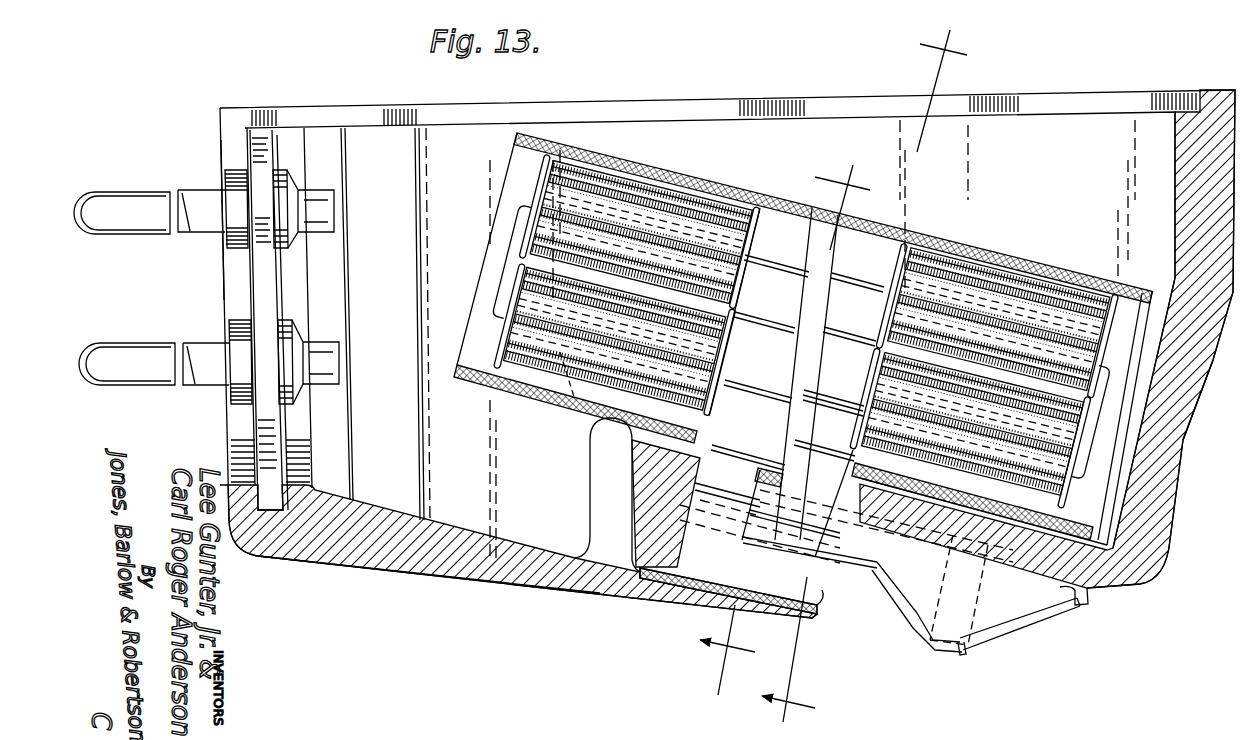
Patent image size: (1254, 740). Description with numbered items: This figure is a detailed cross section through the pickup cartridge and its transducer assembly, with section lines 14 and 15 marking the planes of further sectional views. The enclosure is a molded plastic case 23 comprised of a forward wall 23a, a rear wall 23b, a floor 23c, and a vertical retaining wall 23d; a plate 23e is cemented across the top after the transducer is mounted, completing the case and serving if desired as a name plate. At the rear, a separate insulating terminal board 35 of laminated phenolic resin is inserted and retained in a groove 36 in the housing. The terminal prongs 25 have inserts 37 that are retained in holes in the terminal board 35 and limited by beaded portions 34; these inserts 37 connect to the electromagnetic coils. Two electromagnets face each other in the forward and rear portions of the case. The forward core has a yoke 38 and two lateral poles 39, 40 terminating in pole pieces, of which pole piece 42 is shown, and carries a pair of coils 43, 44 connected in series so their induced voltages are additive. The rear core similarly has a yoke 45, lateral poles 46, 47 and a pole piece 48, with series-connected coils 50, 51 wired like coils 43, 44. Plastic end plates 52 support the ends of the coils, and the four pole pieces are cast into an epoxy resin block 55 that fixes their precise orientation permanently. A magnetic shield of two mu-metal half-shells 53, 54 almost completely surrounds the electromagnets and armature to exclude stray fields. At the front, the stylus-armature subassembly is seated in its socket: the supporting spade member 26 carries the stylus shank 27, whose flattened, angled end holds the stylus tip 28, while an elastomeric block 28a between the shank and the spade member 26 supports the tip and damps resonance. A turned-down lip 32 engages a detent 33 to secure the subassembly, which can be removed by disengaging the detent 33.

The section line 14— 14 is at (960, 42).
The section line 15— 15 is at (862, 172).
The molded plastic case 23 is at (1172, 520).
The forward wall 23a is at (1200, 385).
The rear wall 23b is at (222, 142).
The floor 23c is at (422, 580).
The vertical retaining wall 23d is at (590, 480).
The plate 23e is at (758, 100).
The terminal prongs 25 is at (127, 205).
The supporting spade member 26 is at (1062, 612).
The stylus shank 27 is at (915, 630).
The stylus tip 28 is at (959, 657).
The elastomeric block 28a is at (1000, 624).
The turned-down lip 32 is at (1084, 606).
The detent 33 is at (1090, 595).
The beaded portions 34 is at (228, 185).
The insulating terminal board 35 is at (252, 288).
The groove 36 is at (268, 512).
The inserts 37 is at (328, 205).
The yoke 38 is at (1105, 380).
The lateral pole 39 is at (856, 383).
The lateral pole 40 is at (826, 475).
The pole piece 42 is at (847, 517).
The coil 43 is at (1012, 290).
The coil 44 is at (1082, 440).
The yoke 45 is at (511, 240).
The lateral pole 46 is at (768, 357).
The lateral pole 47 is at (575, 400).
The pole piece 48 is at (833, 582).
The coil 50 is at (600, 190).
The coil 51 is at (560, 370).
The plastic end plates 52 is at (540, 196).
The half-shell 53 is at (742, 198).
The half-shell 54 is at (730, 182).
The epoxy resin block 55 is at (648, 585).